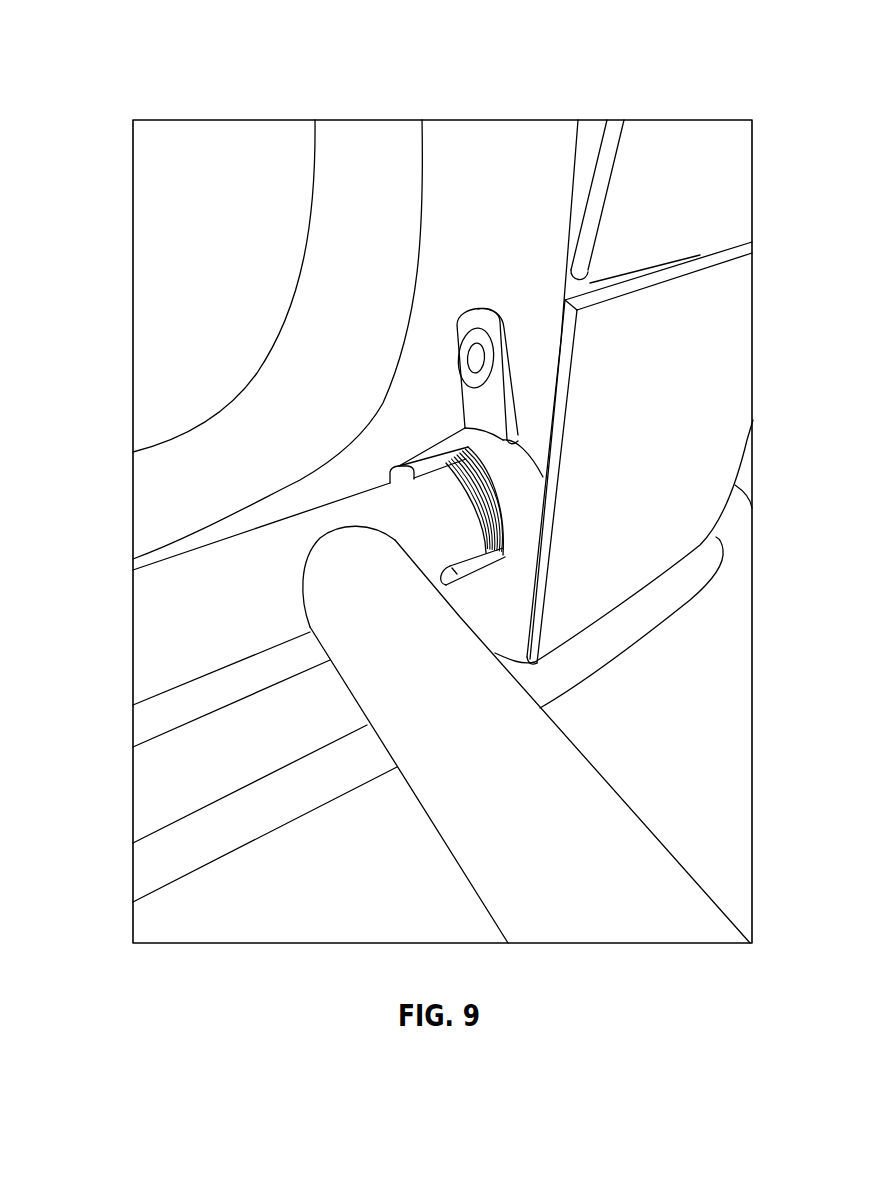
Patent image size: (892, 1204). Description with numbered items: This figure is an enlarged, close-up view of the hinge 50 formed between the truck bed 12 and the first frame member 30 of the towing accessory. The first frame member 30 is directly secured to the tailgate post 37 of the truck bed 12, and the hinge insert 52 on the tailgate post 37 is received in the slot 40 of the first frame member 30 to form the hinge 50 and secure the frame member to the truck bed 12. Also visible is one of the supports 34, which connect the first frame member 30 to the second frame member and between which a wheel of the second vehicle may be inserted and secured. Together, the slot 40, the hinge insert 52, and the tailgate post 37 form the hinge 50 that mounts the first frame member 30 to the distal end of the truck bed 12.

The truck bed 12 is at (215, 160).
The tailgate post 37 is at (488, 188).
The first frame member 30 is at (153, 631).
The support 34 is at (617, 837).
The slot 40 is at (445, 528).
The hinge 50 is at (500, 528).
The hinge insert 52 is at (515, 507).